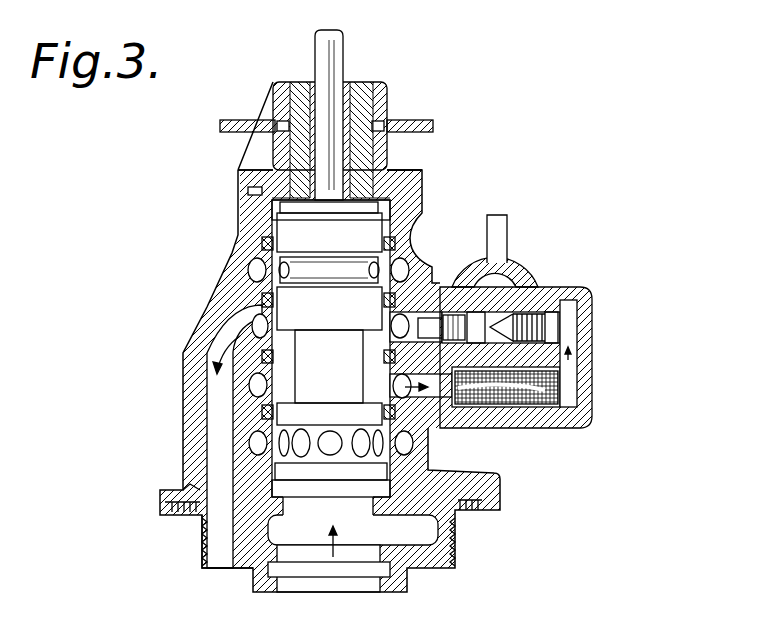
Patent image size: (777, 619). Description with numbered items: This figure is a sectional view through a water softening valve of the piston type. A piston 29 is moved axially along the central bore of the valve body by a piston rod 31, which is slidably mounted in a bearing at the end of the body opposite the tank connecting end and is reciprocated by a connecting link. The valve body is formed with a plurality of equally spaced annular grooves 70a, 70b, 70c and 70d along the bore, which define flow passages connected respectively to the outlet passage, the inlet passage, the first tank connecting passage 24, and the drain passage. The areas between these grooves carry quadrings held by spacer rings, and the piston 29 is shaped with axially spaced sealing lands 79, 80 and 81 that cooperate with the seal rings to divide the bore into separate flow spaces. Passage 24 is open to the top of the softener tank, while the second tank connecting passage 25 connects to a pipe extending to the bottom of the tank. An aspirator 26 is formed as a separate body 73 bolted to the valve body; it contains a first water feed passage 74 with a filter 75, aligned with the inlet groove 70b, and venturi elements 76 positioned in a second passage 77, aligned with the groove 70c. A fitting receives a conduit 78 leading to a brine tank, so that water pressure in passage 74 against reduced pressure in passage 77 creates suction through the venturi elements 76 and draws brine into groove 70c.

The piston rod 31 is at (336, 56).
The piston 29 is at (366, 237).
The sealing land 81 is at (329, 232).
The middle land 80 is at (329, 308).
The sealing land 79 is at (329, 414).
The outlet passage 70a is at (403, 448).
The inlet passage 70b is at (252, 385).
The tank connecting passage 70c is at (253, 328).
The drain passage 70d is at (247, 265).
The separate body 73 is at (592, 348).
The first water feed passage 74 is at (523, 407).
The filter 75 is at (590, 386).
The venturi elements 76 is at (503, 313).
The second passage 77 is at (478, 322).
The conduit 78 is at (505, 230).
The aspirator 26 is at (521, 270).
The first tank connecting passage 24 is at (237, 560).
The second tank connecting passage 25 is at (355, 593).